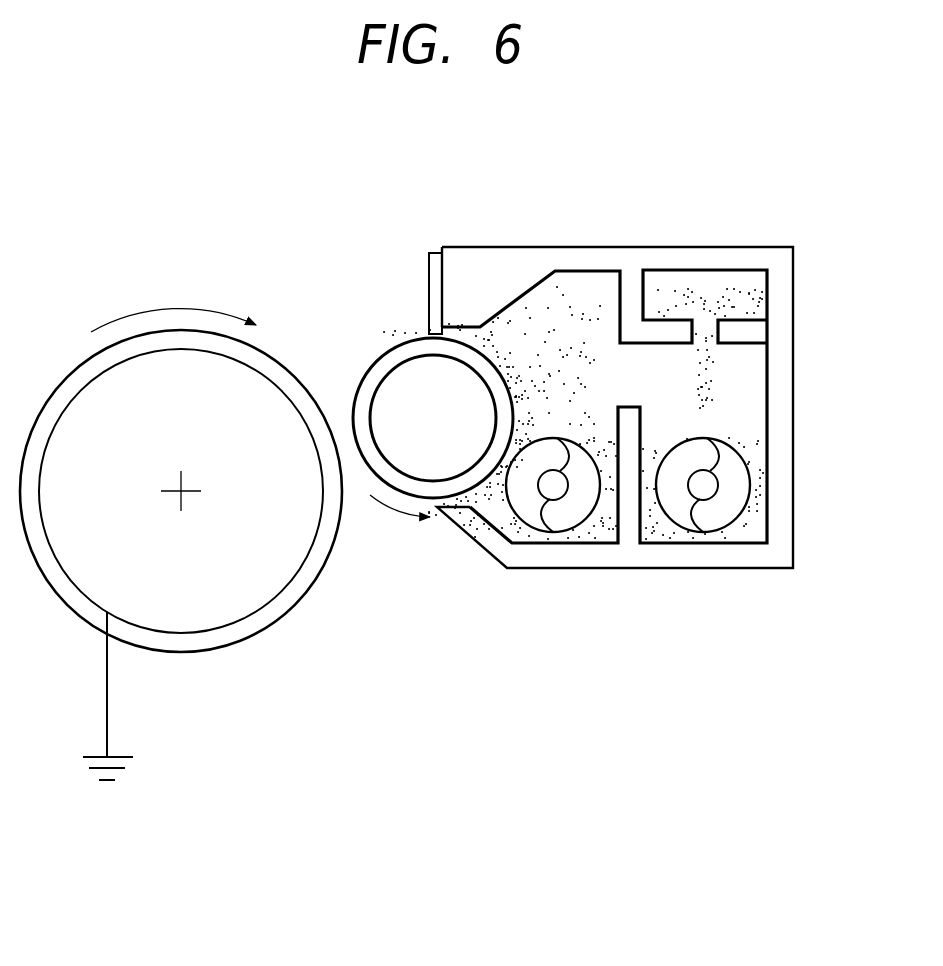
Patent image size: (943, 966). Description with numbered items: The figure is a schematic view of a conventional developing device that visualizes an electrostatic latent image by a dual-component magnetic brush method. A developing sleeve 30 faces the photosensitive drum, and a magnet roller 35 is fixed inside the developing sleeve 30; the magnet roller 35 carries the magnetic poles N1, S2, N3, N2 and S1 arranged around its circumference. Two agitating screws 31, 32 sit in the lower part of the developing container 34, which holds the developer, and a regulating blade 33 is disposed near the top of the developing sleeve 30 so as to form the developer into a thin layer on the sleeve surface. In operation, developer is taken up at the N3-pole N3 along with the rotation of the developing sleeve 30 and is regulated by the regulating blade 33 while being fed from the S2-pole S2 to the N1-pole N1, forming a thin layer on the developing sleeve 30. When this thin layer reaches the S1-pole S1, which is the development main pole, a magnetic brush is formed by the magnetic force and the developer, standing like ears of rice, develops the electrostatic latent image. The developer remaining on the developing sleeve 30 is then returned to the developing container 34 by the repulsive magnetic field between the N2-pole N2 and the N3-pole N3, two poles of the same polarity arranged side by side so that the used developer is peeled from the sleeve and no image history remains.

The developing sleeve 30 is at (407, 342).
The agitating screw 31 is at (577, 513).
The agitating screw 32 is at (683, 515).
The regulating blade 33 is at (435, 253).
The developing container 34 is at (783, 395).
The magnet roller 35 is at (404, 399).
The N1-pole N1 is at (402, 390).
The N2-pole N2 is at (434, 462).
The N3-pole N3 is at (472, 420).
The S1-pole S1 is at (395, 432).
The S2-pole S2 is at (450, 380).